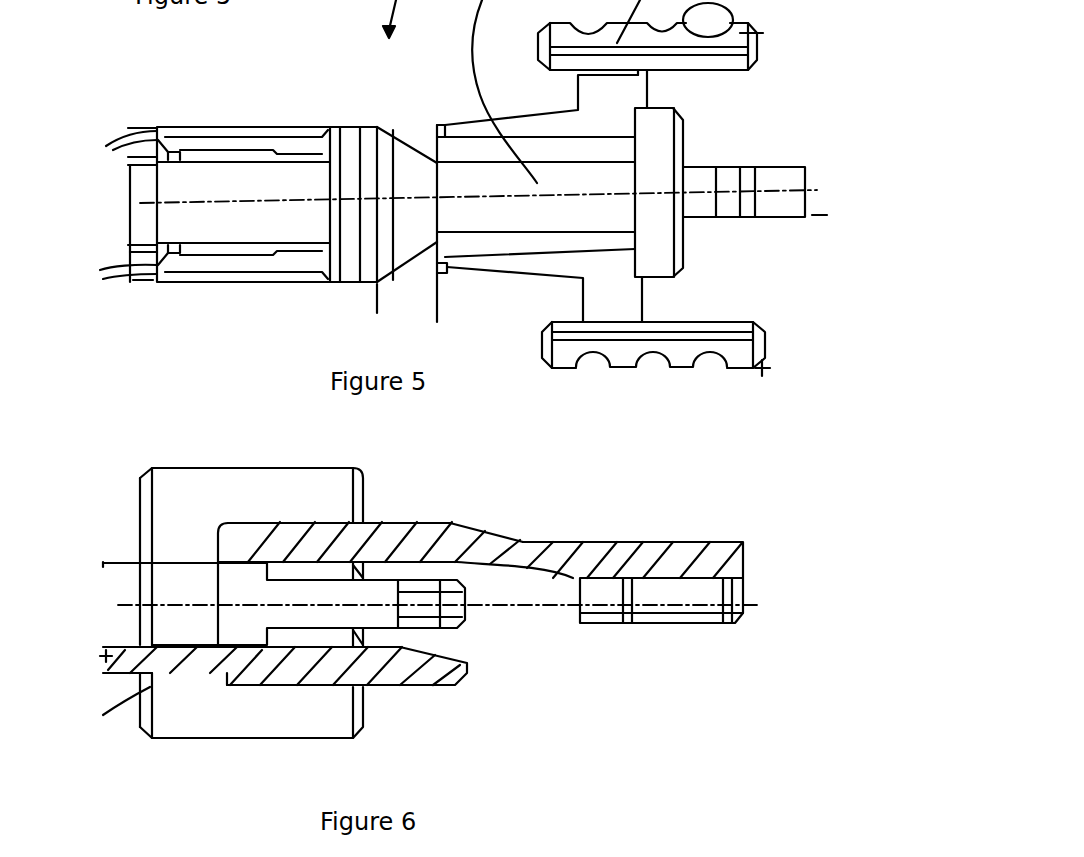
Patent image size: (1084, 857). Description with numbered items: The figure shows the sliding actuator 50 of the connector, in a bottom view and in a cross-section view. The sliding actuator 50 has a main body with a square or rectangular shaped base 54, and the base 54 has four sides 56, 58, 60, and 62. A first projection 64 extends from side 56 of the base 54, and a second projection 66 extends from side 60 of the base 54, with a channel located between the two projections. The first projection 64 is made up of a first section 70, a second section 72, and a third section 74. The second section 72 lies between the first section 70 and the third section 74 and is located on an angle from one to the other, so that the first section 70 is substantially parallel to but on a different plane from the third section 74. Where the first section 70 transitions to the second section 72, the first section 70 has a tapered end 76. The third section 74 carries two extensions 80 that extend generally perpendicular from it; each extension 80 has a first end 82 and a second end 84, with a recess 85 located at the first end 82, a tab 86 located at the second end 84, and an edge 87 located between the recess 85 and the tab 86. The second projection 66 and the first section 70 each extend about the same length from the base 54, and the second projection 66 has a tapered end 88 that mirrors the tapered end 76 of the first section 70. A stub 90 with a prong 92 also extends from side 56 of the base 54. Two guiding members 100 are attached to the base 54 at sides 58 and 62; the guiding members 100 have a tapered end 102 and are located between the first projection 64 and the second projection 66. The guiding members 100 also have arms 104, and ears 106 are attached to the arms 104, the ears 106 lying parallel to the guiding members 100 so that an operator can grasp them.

In FIG. 6, the sliding actuator 50 is at (767, 488).
In FIG. 5, the base 54 is at (662, 144).
In FIG. 6, the base 54 is at (233, 542).
In FIG. 6, the side 56 is at (217, 670).
In FIG. 5, the side 58 is at (667, 286).
In FIG. 6, the side 60 is at (230, 523).
In FIG. 5, the side 62 is at (660, 107).
In FIG. 6, the first projection 64 is at (443, 527).
In FIG. 6, the second projection 66 is at (393, 673).
In FIG. 6, the first section 70 is at (370, 527).
In FIG. 6, the second section 72 is at (508, 538).
In FIG. 6, the third section 74 is at (637, 542).
In FIG. 6, the tapered end 76 is at (458, 555).
In FIG. 5, the extension 80 is at (228, 157).
In FIG. 6, the extension 80 is at (693, 594).
In FIG. 6, the first end 82 is at (747, 613).
In FIG. 5, the second end 84 is at (333, 133).
In FIG. 6, the second end 84 is at (580, 623).
In FIG. 5, the recess 85 is at (166, 157).
In FIG. 5, the tab 86 is at (290, 157).
In FIG. 5, the edge 87 is at (215, 160).
In FIG. 5, the tapered end 88 is at (535, 123).
In FIG. 6, the tapered end 88 is at (450, 678).
In FIG. 5, the stub 90 is at (790, 187).
In FIG. 5, the prong 92 is at (747, 203).
In FIG. 5, the guiding member 100 is at (563, 268).
In FIG. 5, the tapered end 102 is at (437, 128).
In FIG. 5, the arm 104 is at (620, 87).
In FIG. 5, the ear 106 is at (630, 337).
In FIG. 6, the ear 106 is at (297, 477).